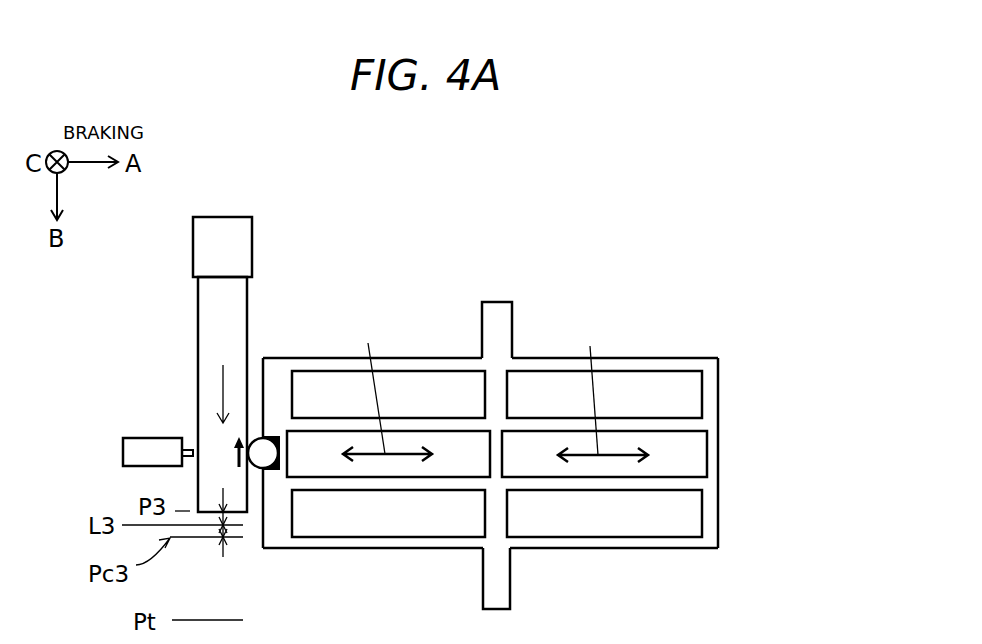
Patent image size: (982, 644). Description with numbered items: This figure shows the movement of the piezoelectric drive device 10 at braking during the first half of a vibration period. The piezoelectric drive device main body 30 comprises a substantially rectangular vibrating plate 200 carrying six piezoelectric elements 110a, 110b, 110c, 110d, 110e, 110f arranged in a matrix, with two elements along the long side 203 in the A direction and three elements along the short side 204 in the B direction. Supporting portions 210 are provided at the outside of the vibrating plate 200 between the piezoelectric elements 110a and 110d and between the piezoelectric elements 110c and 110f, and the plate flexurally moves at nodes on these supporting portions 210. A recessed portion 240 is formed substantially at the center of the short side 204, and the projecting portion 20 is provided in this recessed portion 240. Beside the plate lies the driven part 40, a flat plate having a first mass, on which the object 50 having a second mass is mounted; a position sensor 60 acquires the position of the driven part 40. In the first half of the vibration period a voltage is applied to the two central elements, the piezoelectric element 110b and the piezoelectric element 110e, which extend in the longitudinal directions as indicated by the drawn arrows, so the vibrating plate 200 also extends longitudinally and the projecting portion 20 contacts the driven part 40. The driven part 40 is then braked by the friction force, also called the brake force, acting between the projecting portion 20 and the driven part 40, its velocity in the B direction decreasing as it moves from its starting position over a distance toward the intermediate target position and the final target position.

The piezoelectric drive device 10 is at (105, 301).
The projecting portion 20 is at (281, 466).
The piezoelectric drive device main body 30 is at (795, 261).
The driven part 40 is at (248, 292).
The object 50 is at (237, 217).
The position sensor 60 is at (152, 438).
The piezoelectric element 110a is at (462, 371).
The piezoelectric element 110b is at (333, 431).
The piezoelectric element 110c is at (445, 537).
The piezoelectric element 110d is at (662, 371).
The piezoelectric element 110e is at (624, 431).
The piezoelectric element 110f is at (645, 537).
The vibrating plate 200 is at (522, 452).
The long side 203 is at (387, 358).
The short side 204 is at (263, 548).
The supporting portion 210 is at (512, 312).
The recessed portion 240 is at (273, 436).